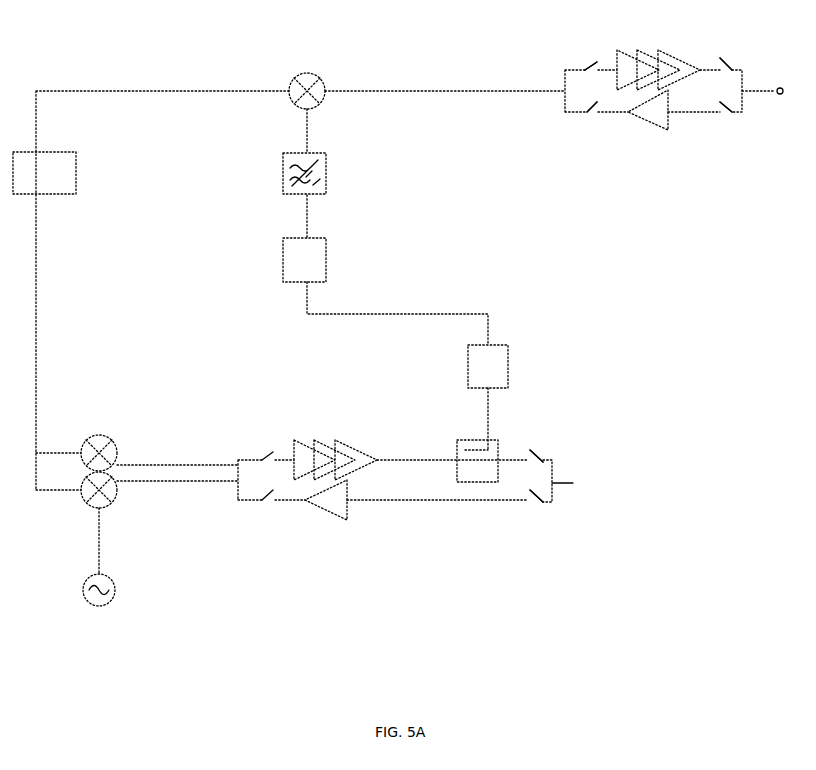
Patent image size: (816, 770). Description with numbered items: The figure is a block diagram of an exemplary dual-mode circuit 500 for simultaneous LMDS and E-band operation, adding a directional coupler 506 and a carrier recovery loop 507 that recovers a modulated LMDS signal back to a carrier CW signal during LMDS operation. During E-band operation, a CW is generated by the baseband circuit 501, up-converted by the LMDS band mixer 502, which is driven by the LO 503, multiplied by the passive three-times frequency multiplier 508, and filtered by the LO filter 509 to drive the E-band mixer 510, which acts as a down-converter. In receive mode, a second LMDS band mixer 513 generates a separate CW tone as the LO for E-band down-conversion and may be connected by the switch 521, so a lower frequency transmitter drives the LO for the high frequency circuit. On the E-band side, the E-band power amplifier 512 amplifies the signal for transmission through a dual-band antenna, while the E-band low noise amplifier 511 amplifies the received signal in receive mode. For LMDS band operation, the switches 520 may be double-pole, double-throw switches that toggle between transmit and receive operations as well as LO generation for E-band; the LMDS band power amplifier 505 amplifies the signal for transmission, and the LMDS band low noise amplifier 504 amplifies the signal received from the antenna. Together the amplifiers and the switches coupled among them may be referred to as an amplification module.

The dual-mode circuit 500 is at (402, 340).
The baseband circuit 501 is at (72, 194).
The LMDS band mixer 502 is at (107, 510).
The LO 503 is at (82, 582).
The LMDS band low noise amplifier 504 is at (348, 515).
The LMDS band power amplifier 505 is at (295, 438).
The directional coupler 506 is at (457, 445).
The carrier recovery loop 507 is at (467, 350).
The passive 3× frequency multiplier 508 is at (322, 254).
The LO filter 509 is at (322, 177).
The E-band mixer 510 is at (292, 77).
The E-band low noise amplifier 511 is at (668, 128).
The E-band power amplifier 512 is at (637, 47).
The LMDS band mixer 513 is at (82, 447).
The switches 520 is at (742, 70).
The switch 521 is at (243, 483).